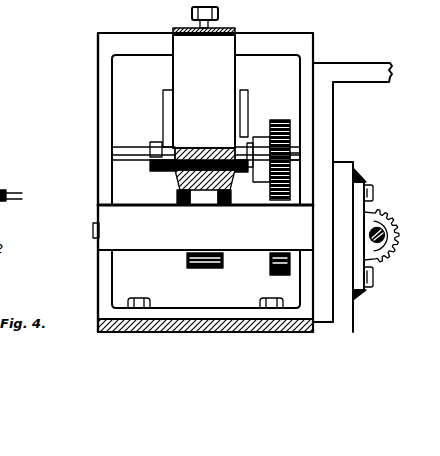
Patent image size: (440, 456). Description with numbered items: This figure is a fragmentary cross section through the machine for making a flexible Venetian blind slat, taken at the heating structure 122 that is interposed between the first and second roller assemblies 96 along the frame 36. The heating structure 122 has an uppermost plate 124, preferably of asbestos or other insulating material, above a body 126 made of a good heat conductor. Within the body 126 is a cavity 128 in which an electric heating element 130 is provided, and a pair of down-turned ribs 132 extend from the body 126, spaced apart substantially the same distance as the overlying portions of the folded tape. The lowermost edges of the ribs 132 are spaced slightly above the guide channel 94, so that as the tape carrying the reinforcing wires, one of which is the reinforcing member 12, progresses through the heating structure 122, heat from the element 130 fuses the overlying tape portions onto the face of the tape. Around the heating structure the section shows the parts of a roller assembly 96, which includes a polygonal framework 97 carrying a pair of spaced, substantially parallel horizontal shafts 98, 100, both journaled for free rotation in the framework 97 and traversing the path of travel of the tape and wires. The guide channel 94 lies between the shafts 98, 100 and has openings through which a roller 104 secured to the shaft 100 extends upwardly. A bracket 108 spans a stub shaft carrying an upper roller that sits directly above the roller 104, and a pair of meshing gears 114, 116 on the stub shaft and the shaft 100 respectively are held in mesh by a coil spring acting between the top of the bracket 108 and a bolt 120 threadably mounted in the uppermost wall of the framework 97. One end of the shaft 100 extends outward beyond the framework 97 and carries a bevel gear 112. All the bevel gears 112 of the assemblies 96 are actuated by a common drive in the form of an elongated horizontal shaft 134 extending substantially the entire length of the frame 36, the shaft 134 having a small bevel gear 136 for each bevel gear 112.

The reinforcing member 12 is at (22, 197).
The frame 36 is at (181, 326).
The guide channel 94 is at (180, 201).
The roller assembly 96 is at (245, 173).
The polygonal framework 97 is at (98, 93).
The horizontal shaft 98 is at (145, 148).
The horizontal shaft 100 is at (93, 231).
The roller 104 is at (215, 266).
The bracket 108 is at (172, 93).
The bevel gear 112 is at (366, 298).
The gear 114 is at (290, 125).
The gear 116 is at (277, 276).
The bolt 120 is at (219, 19).
The heating structure 122 is at (206, 181).
The uppermost plate 124 is at (200, 147).
The body 126 is at (176, 183).
The cavity 128 is at (257, 181).
The electric heating element 130 is at (247, 128).
The down-turned rib 132 is at (215, 201).
The elongated shaft 134 is at (382, 228).
The small bevel gear 136 is at (392, 252).